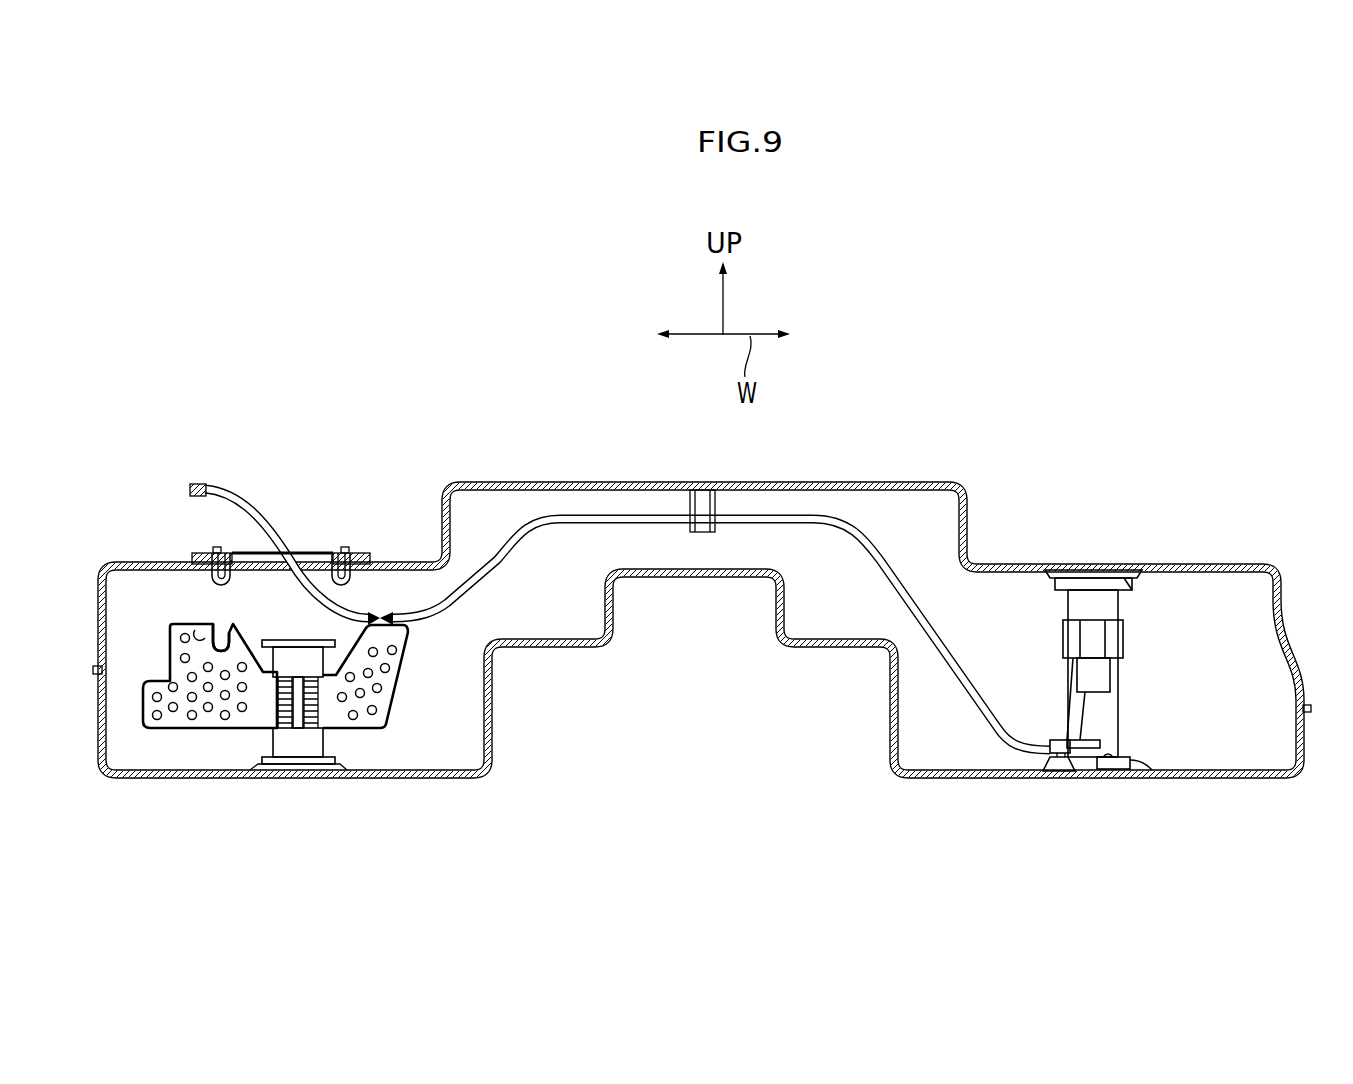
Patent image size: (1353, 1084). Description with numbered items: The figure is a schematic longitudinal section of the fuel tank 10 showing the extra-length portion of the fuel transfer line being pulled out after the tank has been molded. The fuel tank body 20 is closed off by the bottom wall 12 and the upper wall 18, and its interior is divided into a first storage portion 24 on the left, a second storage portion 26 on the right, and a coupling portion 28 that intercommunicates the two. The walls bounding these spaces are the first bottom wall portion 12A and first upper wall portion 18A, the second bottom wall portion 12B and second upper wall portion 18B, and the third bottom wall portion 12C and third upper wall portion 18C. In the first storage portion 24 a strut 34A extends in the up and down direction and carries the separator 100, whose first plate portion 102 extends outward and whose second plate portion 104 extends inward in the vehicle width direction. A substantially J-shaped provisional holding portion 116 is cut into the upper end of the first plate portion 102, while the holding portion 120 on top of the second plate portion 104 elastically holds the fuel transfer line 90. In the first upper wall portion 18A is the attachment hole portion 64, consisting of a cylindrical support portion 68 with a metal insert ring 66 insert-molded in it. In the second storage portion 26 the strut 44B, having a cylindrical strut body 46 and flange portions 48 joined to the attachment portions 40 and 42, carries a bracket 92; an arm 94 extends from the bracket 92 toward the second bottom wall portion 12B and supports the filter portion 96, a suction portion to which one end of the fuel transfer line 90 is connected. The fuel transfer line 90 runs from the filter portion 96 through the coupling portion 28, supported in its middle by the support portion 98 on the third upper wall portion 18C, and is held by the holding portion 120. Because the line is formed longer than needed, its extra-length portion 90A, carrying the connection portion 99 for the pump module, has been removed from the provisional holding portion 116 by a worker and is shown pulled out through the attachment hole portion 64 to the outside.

The fuel tank 10 is at (860, 321).
The bottom wall 12 is at (950, 782).
The first bottom wall portion 12A is at (458, 780).
The second bottom wall portion 12B is at (1240, 782).
The third bottom wall portion 12C is at (828, 648).
The upper wall 18 is at (828, 482).
The first upper wall portion 18A is at (410, 565).
The second upper wall portion 18B is at (1217, 562).
The third upper wall portion 18C is at (540, 482).
The fuel tank body 20 is at (893, 471).
The first storage portion 24 is at (123, 551).
The second storage portion 26 is at (1007, 553).
The coupling portion 28 is at (607, 471).
The strut 34A is at (339, 741).
The attachment portion 40 is at (1100, 770).
The attachment portion 42 is at (1085, 578).
The strut 44B is at (1114, 672).
The strut body 46 is at (1110, 718).
The flange portions 48 is at (1133, 582).
The attachment hole portion 64 is at (232, 571).
The insert ring 66 is at (266, 535).
The support portion 68 is at (229, 586).
The fuel transfer line 90 is at (655, 536).
The extra-length portion 90A is at (282, 538).
The bracket 92 is at (1070, 640).
The arm 94 is at (1078, 730).
The filter portion 96 is at (1032, 775).
The support portion 98 is at (682, 500).
The connection portion 99 is at (206, 487).
The separator 100 is at (188, 693).
The first plate portion 102 is at (140, 703).
The second plate portion 104 is at (410, 676).
The provisional holding portion 116 is at (190, 642).
The holding portion 120 is at (372, 608).